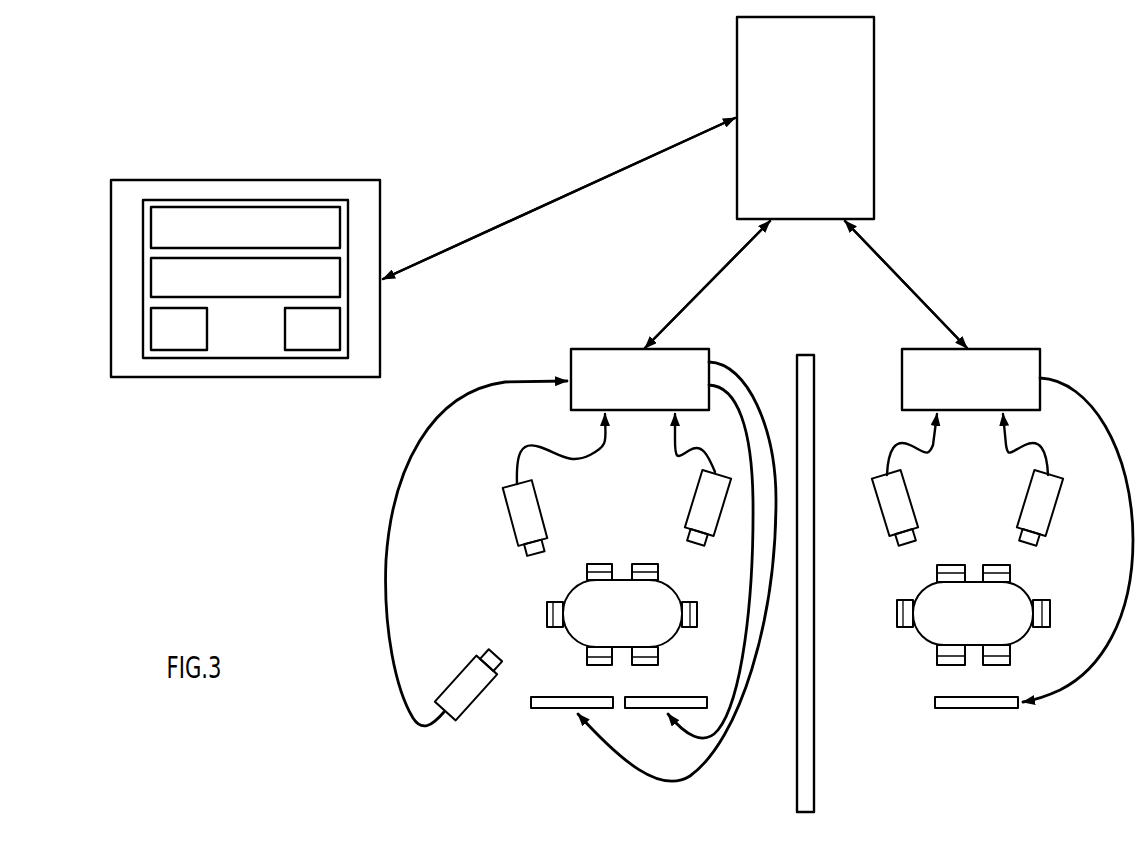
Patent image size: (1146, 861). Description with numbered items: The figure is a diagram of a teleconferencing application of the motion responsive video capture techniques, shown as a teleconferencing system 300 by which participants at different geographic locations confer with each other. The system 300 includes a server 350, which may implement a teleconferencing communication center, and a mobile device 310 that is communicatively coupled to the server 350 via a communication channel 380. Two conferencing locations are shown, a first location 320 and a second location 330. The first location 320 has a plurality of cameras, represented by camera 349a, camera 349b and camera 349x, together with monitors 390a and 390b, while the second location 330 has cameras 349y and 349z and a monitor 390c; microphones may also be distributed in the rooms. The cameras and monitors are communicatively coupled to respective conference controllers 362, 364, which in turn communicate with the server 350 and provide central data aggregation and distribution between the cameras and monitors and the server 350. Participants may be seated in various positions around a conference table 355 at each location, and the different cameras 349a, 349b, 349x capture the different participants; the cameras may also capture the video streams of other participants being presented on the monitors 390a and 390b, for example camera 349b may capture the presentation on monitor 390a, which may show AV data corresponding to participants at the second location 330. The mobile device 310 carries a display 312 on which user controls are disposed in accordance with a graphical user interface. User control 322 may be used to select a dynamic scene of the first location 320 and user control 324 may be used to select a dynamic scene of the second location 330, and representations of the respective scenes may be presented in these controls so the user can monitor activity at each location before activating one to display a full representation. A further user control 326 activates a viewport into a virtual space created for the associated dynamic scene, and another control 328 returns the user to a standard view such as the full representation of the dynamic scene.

The teleconferencing system 300 is at (412, 112).
The mobile device 310 is at (163, 180).
The display 312 is at (246, 360).
The user control 322 is at (151, 226).
The user control 324 is at (151, 279).
The user control 326 is at (177, 353).
The control 328 is at (310, 352).
The server 350 is at (874, 104).
The communication channel 380 is at (560, 199).
The conference controller 362 is at (692, 345).
The conference controller 364 is at (1010, 345).
The camera 349a is at (458, 678).
The camera 349b is at (505, 503).
The camera 349x is at (687, 513).
The camera 349y is at (880, 507).
The camera 349z is at (1057, 500).
The conference table 355 is at (676, 582).
The monitor 390a is at (573, 697).
The monitor 390b is at (668, 697).
The monitor 390c is at (958, 710).
The location 320 is at (742, 766).
The location 330 is at (1057, 759).